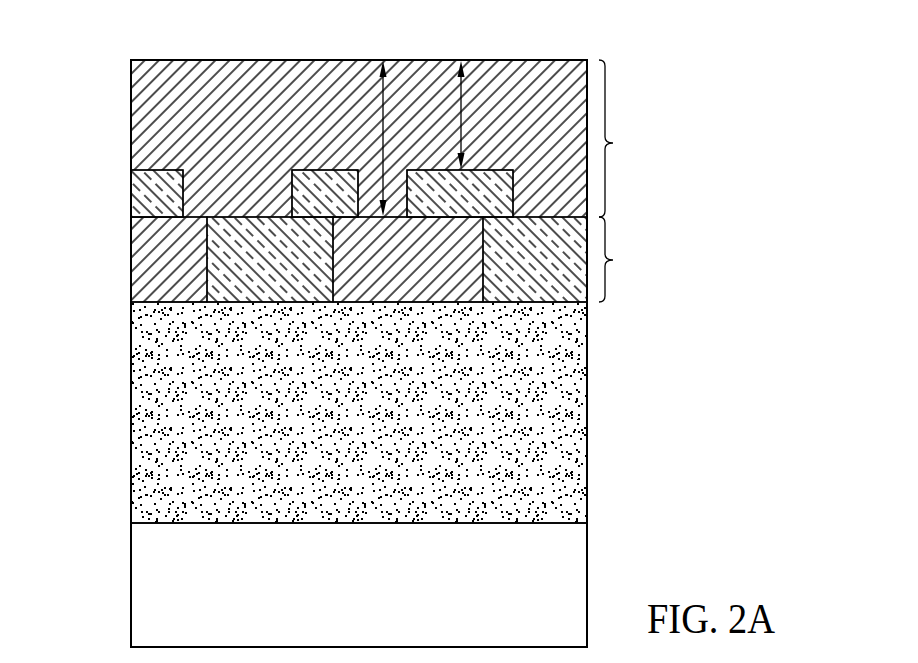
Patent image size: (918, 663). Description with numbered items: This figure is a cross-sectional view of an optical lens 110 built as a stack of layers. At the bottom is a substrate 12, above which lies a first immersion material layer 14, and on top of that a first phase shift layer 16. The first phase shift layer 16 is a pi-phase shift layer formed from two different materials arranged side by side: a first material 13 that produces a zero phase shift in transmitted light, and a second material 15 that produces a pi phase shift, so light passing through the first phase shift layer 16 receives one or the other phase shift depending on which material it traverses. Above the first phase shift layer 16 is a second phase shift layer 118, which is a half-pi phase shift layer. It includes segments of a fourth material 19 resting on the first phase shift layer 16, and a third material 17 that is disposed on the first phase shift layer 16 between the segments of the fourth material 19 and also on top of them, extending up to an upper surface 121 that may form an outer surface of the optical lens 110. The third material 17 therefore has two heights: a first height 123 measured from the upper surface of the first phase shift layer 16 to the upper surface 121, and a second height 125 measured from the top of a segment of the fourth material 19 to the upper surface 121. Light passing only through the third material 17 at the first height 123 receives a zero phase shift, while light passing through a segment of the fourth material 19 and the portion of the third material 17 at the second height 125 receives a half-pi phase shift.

The optical lens 110 is at (715, 58).
The substrate 12 is at (158, 570).
The first material 13 is at (150, 272).
The first immersion material layer 14 is at (158, 375).
The second material 15 is at (220, 240).
The first phase shift layer 16 is at (614, 262).
The third material 17 is at (148, 97).
The fourth material 19 is at (135, 193).
The second phase shift layer 118 is at (615, 143).
The upper surface 121 is at (505, 60).
The first height 123 is at (383, 123).
The second height 125 is at (461, 97).